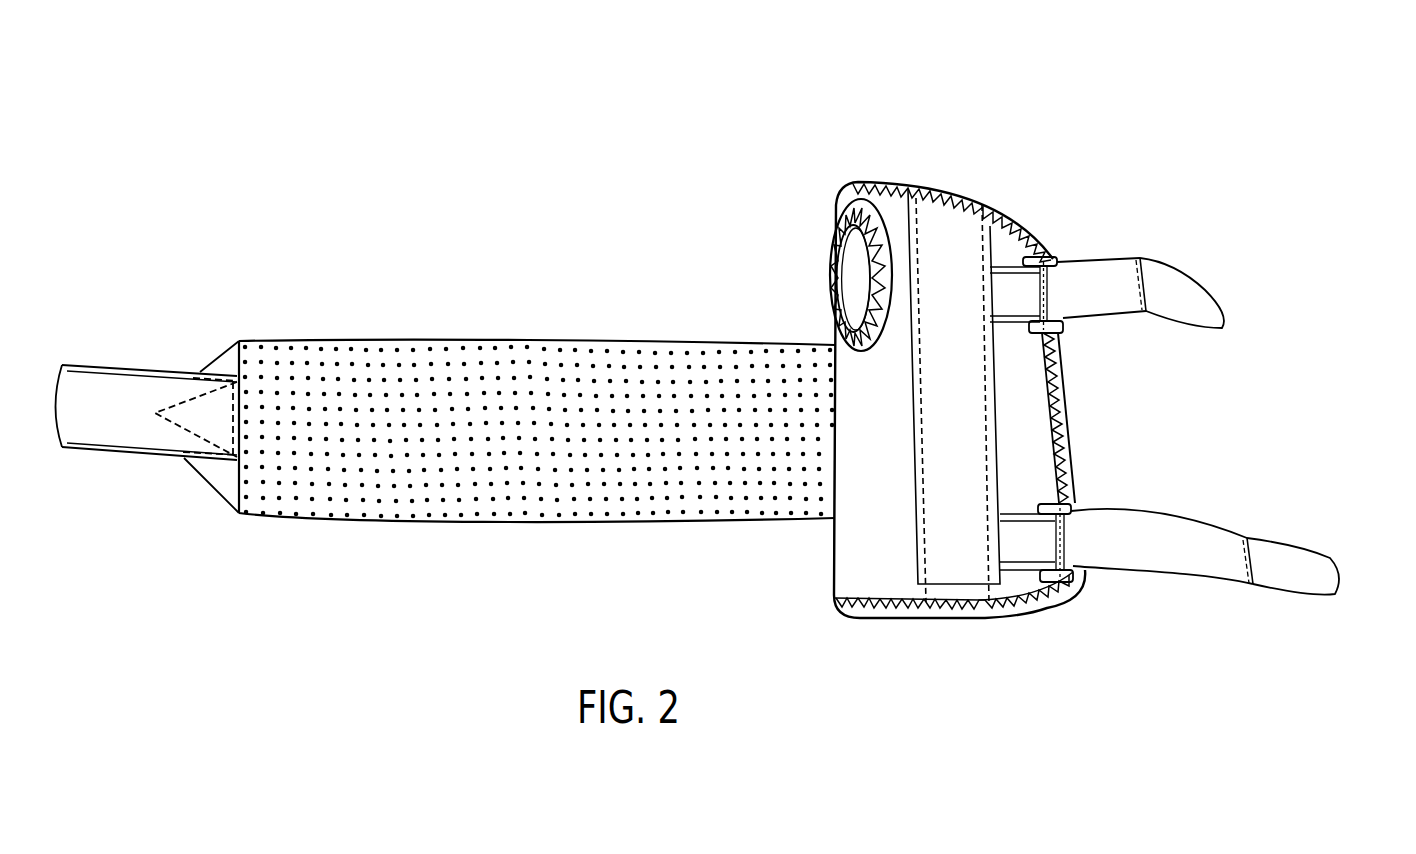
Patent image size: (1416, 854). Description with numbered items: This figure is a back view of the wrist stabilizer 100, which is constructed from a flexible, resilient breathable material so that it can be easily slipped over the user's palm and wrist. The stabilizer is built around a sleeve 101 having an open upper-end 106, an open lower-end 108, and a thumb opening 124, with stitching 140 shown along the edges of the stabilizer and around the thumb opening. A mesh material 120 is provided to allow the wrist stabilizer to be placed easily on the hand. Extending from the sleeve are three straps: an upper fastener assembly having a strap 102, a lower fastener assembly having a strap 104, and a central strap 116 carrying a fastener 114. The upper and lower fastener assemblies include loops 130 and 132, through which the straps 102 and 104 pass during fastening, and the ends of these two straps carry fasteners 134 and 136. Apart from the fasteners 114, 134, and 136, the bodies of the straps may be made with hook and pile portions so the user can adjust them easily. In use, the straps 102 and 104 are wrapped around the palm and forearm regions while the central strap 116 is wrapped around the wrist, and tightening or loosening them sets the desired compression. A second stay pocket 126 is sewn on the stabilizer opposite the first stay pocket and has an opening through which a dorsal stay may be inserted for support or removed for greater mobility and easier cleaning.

The wrist stabilizer 100 is at (1004, 96).
The sleeve 101 is at (1112, 403).
The strap 102 is at (1195, 281).
The strap 104 is at (1303, 548).
The open upper-end 106 is at (992, 206).
The open lower-end 108 is at (948, 620).
The fastener 114 is at (112, 457).
The central strap 116 is at (621, 342).
The mesh material 120 is at (833, 548).
The thumb opening 124 is at (833, 256).
The second stay pocket 126 is at (968, 562).
The loop 130 is at (1052, 258).
The loop 132 is at (1073, 502).
The fastener 134 is at (1228, 323).
The fastener 136 is at (1342, 592).
The stitching 140 is at (878, 190).